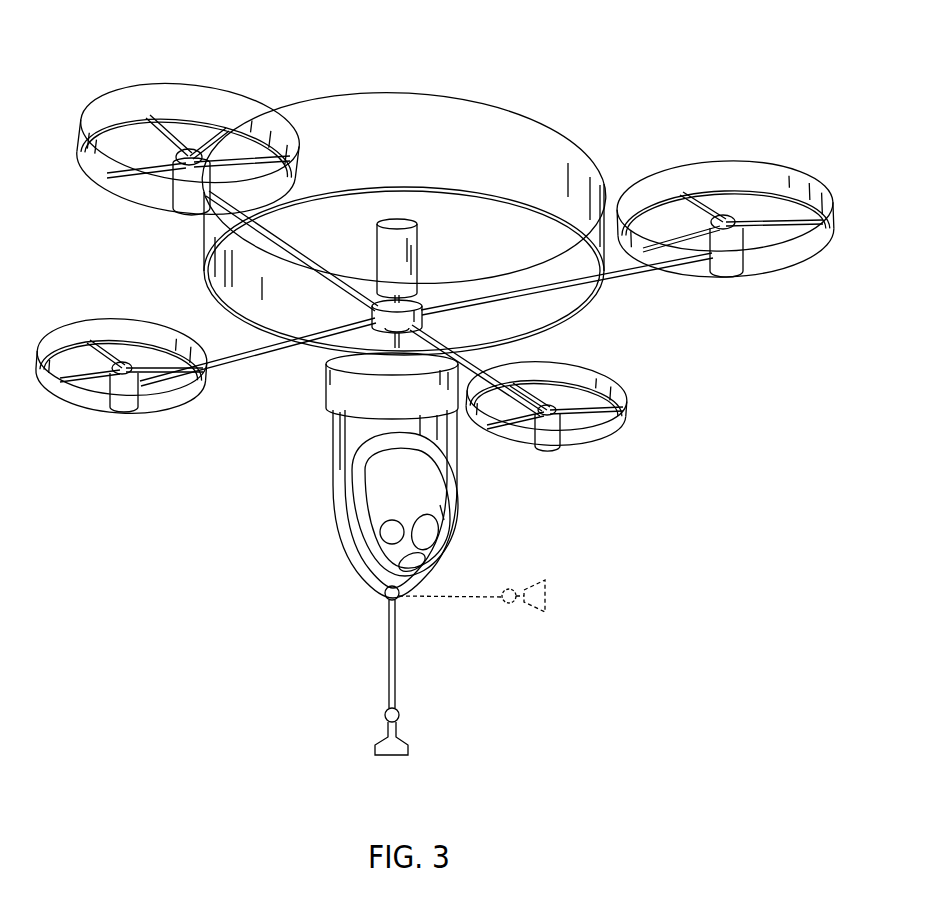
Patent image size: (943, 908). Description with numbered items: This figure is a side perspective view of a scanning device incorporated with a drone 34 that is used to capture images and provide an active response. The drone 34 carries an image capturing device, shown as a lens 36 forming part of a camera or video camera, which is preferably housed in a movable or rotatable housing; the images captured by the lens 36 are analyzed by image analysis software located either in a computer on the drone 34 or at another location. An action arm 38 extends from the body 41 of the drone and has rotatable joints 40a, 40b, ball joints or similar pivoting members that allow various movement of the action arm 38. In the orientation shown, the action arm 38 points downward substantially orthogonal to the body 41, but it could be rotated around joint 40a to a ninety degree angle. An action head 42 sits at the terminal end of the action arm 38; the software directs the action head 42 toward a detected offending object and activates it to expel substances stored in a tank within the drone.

The drone 34 is at (585, 113).
The lens 36 is at (425, 533).
The action arm 38 is at (378, 653).
The rotatable joint 40a is at (386, 594).
The rotatable joint 40b is at (386, 717).
The body 41 is at (293, 313).
The action head 42 is at (393, 750).